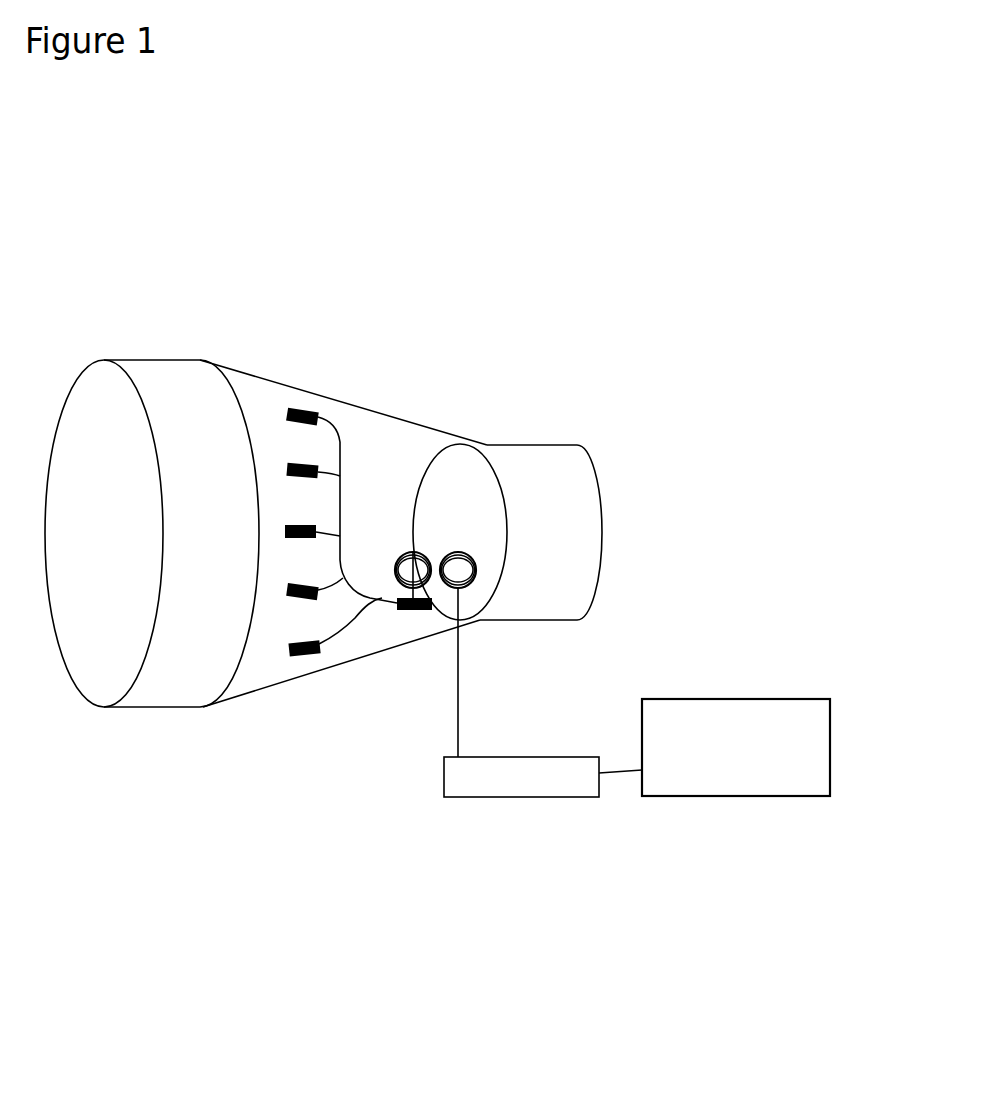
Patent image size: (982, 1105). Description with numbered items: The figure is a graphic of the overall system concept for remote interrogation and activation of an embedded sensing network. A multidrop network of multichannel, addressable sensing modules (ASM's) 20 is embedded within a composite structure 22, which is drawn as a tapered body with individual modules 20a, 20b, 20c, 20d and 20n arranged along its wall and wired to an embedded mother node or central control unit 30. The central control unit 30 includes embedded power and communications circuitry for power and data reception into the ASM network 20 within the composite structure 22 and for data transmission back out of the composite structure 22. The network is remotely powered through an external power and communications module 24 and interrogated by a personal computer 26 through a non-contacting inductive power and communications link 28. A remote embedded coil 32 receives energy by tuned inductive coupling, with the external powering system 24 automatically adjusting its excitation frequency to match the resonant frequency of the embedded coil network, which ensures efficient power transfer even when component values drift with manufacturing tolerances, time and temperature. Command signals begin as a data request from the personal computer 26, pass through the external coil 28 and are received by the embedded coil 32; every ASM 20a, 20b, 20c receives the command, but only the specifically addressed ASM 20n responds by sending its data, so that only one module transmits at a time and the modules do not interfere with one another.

The addressable sensing modules network 20 is at (307, 398).
The addressable sensing module 20a is at (287, 412).
The addressable sensing module 20b is at (288, 468).
The addressable sensing module 20c is at (288, 530).
The addressable sensing module 20d is at (288, 592).
The addressable sensing module 20n is at (290, 648).
The composite structure 22 is at (148, 376).
The external power and communications module 24 is at (498, 786).
The personal computer 26 is at (735, 699).
The inductive power and communications link 28 is at (470, 548).
The central control unit 30 is at (407, 611).
The embedded coil 32 is at (470, 437).